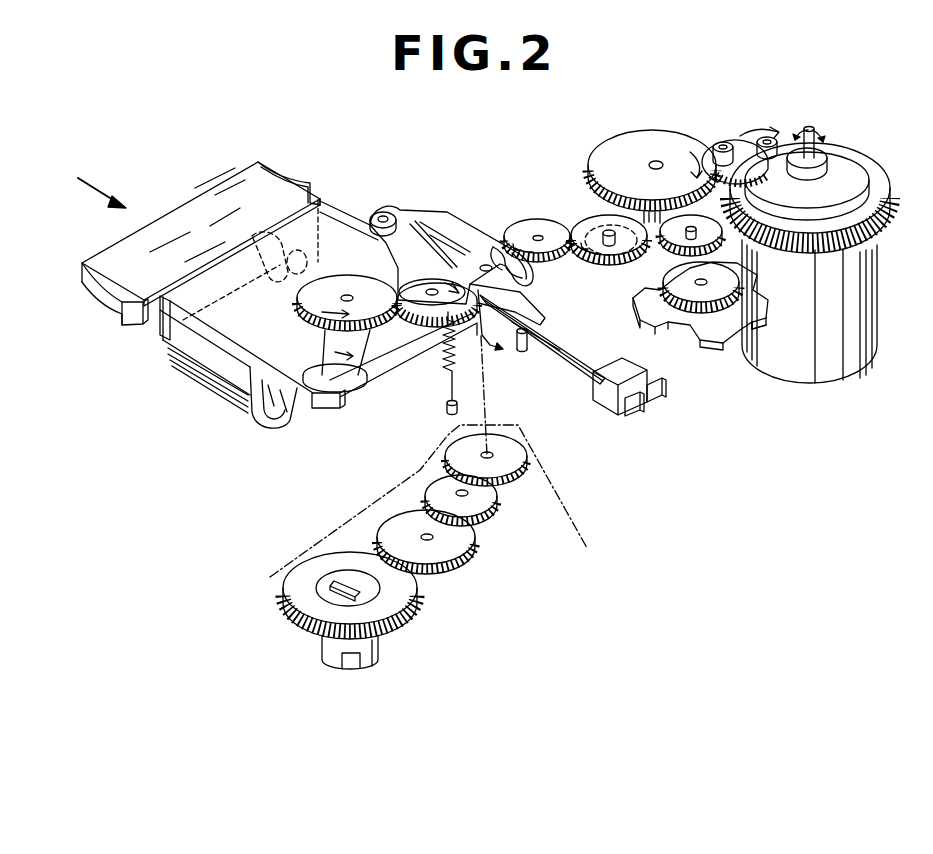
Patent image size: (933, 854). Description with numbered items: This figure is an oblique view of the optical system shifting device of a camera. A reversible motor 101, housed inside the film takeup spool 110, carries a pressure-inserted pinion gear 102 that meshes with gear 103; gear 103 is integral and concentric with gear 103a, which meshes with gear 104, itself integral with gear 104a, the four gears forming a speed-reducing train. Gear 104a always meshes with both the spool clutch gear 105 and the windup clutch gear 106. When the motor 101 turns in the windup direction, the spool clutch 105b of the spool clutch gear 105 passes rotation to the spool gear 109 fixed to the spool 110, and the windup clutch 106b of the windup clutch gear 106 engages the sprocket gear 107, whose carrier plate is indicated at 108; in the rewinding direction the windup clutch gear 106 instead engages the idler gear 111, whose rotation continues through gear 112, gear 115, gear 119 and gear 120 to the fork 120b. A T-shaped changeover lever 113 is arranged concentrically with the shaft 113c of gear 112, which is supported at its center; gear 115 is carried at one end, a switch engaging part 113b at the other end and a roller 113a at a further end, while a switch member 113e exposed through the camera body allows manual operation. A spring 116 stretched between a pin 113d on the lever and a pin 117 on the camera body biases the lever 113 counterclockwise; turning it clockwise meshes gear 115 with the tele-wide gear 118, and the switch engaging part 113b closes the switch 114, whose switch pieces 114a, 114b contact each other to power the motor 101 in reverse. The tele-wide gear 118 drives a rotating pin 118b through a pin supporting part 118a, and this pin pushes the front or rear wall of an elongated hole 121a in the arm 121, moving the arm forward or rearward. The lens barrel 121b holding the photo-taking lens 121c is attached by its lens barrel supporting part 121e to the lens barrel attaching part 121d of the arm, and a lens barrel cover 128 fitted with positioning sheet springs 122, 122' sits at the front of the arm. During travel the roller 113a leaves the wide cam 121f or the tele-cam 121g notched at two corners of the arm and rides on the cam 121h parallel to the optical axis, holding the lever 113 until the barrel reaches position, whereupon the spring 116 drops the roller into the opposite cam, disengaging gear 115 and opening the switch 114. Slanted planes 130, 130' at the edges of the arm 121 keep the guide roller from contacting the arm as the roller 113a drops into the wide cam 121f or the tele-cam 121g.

The reversible motor 101 is at (812, 146).
The pinion gear 102 is at (772, 137).
The gear 103 is at (742, 145).
The gear 103a is at (723, 141).
The gear 104 is at (618, 150).
The gear 104a is at (669, 190).
The spool clutch gear 105 is at (697, 218).
The spool clutch 105b is at (742, 270).
The windup clutch gear 106 is at (612, 222).
The windup clutch 106b is at (592, 226).
The sprocket gear 107 is at (642, 308).
The cam lobe 108 is at (758, 326).
The spool gear 109 is at (862, 186).
The spool 110 is at (878, 302).
The idler gear 111 is at (541, 224).
The gear 112 is at (498, 244).
The changeover lever 113 is at (446, 216).
The roller 113a is at (390, 214).
The switch engaging part 113b is at (562, 321).
The shaft 113c is at (486, 263).
The pin 113d is at (533, 283).
The switch member 113e is at (534, 351).
The switch 114 is at (648, 404).
The switch piece 114a is at (656, 388).
The switch piece 114b is at (638, 413).
The gear 115 is at (403, 290).
The spring 116 is at (446, 370).
The pin 117 is at (446, 409).
The tele-wide gear 118 is at (274, 285).
The pin supporting part 118a is at (360, 380).
The rotating pin 118b is at (344, 405).
The gear 119 is at (465, 548).
The gear 120 is at (408, 601).
The fork 120b is at (378, 648).
The arm 121 is at (212, 265).
The elongated hole 121a is at (285, 426).
The lens barrel 121b is at (186, 390).
The photo-taking lens 121c is at (254, 420).
The lens barrel attaching part 121d is at (162, 356).
The lens barrel supporting part 121e is at (258, 258).
The wide cam 121f is at (345, 216).
The tele-cam 121g is at (496, 348).
The cam 121h is at (428, 222).
The positioning sheet spring 122 is at (289, 165).
The positioning sheet spring 122' is at (85, 294).
The lens barrel cover 128 is at (172, 213).
The slanted plane 130 is at (325, 421).
The slanted plane 130' is at (120, 325).